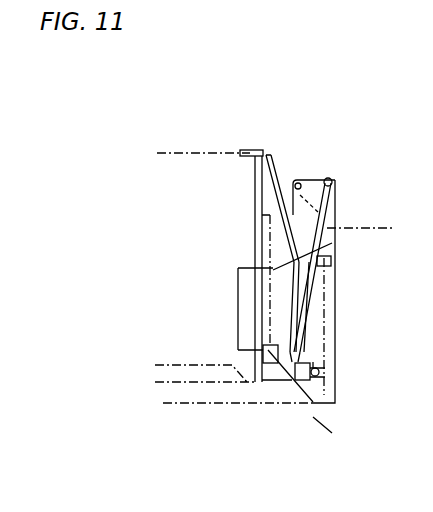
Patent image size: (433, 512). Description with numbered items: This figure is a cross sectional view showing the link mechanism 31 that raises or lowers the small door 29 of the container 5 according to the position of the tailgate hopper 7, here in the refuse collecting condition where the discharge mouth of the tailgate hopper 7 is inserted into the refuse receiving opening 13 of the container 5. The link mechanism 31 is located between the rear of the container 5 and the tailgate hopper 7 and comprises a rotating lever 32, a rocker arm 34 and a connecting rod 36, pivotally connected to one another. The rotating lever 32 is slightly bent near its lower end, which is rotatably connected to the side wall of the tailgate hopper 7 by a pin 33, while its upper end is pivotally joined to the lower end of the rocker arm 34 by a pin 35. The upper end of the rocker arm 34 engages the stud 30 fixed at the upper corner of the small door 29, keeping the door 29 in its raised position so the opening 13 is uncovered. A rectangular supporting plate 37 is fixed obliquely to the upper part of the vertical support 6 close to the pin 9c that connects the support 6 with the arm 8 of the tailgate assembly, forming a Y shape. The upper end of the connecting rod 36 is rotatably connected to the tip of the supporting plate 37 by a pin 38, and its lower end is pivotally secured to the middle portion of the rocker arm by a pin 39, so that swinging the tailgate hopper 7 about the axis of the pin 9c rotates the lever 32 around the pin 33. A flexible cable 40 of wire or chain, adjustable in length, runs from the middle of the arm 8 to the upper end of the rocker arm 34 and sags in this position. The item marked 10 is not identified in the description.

The container 5 is at (178, 153).
The vertical support 6 is at (299, 405).
The tailgate hopper 7 is at (386, 221).
The arm 8 is at (325, 238).
The pin 9c is at (290, 180).
The axis 10 is at (332, 266).
The refuse receiving opening 13 is at (262, 357).
The small door 29 is at (270, 228).
The stud 30 is at (268, 155).
The link mechanism 31 is at (310, 317).
The rotating lever 32 is at (297, 308).
The pin 33 is at (316, 375).
The rocker arm 34 is at (270, 205).
The pin 35 is at (312, 277).
The connecting rod 36 is at (328, 217).
The supporting plate 37 is at (299, 184).
The pin 38 is at (330, 178).
The pin 39 is at (293, 340).
The flexible cable 40 is at (318, 266).